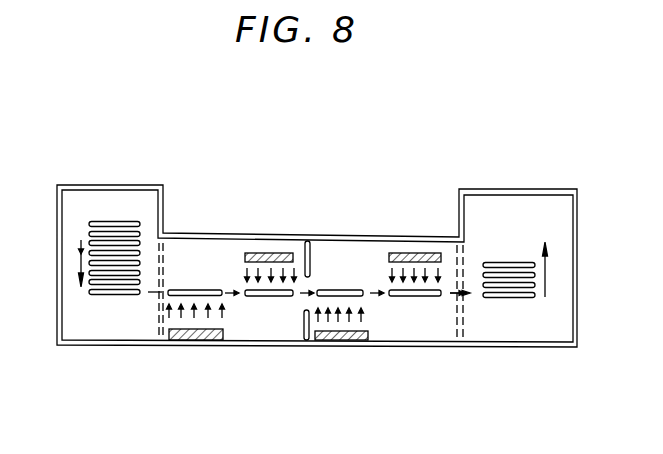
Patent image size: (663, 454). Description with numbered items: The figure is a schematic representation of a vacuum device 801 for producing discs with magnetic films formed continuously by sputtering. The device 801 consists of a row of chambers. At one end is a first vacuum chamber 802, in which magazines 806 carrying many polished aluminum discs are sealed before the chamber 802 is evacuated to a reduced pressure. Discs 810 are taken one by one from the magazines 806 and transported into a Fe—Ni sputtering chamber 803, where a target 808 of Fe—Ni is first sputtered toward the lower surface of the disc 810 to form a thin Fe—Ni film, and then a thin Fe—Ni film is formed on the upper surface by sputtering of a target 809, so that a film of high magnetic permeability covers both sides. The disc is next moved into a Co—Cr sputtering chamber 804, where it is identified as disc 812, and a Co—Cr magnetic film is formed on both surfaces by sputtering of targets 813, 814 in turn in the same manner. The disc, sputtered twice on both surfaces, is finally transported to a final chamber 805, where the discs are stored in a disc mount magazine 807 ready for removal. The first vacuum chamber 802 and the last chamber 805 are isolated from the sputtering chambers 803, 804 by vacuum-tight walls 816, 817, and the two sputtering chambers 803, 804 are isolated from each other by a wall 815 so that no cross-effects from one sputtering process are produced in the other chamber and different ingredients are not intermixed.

The vacuum device 801 is at (320, 231).
The first vacuum chamber 802 is at (88, 325).
The Fe—Ni sputtering chamber 803 is at (257, 330).
The Co—Cr sputtering chamber 804 is at (403, 330).
The final chamber 805 is at (512, 330).
The magazines 806 is at (107, 222).
The disc mount magazine 807 is at (503, 262).
The Fe—Ni target 808 is at (193, 341).
The Fe—Ni target 809 is at (262, 252).
The disc 810 is at (185, 290).
The disc 812 is at (338, 289).
The Co—Cr target 813 is at (337, 341).
The Co—Cr target 814 is at (425, 252).
The wall 815 is at (293, 335).
The vacuum-tight wall 816 is at (158, 325).
The vacuum-tight wall 817 is at (462, 341).